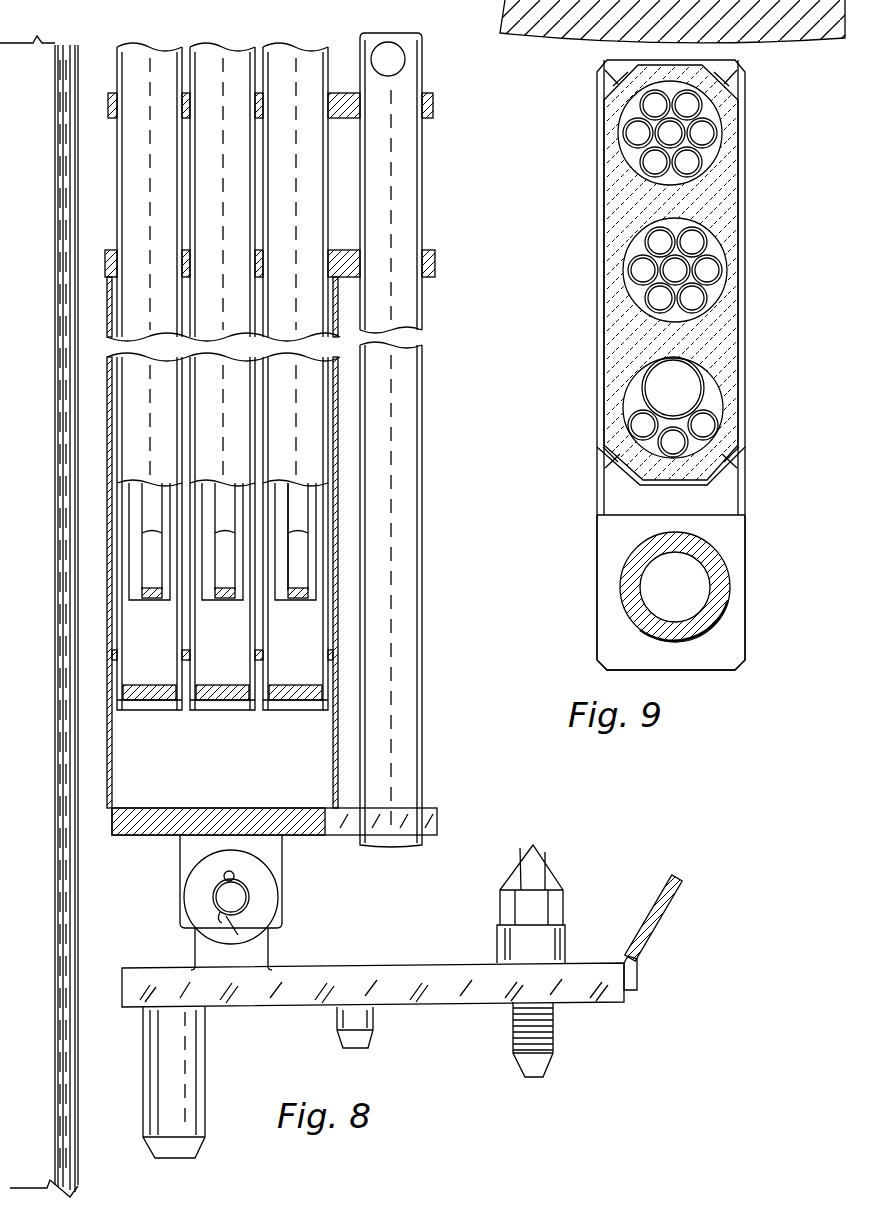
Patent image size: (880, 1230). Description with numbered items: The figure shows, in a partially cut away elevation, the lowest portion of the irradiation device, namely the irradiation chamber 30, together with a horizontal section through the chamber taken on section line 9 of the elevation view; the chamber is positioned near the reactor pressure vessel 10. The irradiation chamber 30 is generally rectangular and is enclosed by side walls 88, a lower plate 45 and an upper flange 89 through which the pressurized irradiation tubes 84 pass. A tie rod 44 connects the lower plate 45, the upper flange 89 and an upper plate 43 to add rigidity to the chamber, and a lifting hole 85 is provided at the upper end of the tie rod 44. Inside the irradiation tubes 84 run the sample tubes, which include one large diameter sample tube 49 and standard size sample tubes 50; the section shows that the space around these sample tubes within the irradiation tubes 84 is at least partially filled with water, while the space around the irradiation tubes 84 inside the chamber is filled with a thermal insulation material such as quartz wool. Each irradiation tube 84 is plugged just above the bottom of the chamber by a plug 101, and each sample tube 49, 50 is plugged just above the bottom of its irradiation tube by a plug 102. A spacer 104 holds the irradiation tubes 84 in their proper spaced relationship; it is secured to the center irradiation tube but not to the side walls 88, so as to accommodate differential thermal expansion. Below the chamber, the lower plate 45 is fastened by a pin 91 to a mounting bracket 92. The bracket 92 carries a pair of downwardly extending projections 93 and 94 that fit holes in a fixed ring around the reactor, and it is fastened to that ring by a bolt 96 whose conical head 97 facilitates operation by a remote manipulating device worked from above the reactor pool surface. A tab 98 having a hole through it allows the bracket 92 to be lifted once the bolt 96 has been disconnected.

In FIG. 8, the reactor pressure vessel 10 is at (80, 922).
In FIG. 9, the reactor pressure vessel 10 is at (788, 43).
In FIG. 8, the pressurized irradiation tubes 84 is at (272, 47).
In FIG. 8, the upper plate 43 is at (344, 93).
In FIG. 8, the lifting hole 85 is at (405, 66).
In FIG. 8, the upper flange 89 is at (436, 262).
In FIG. 8, the irradiation chamber 30 is at (345, 408).
In FIG. 8, the side walls 88 is at (337, 470).
In FIG. 9, the side walls 88 is at (745, 220).
In FIG. 8, the section line 9— 9 is at (437, 535).
In FIG. 8, the standard size sample tubes 50 is at (303, 598).
In FIG. 9, the standard size sample tubes 50 is at (655, 162).
In FIG. 8, the plug 102 is at (320, 598).
In FIG. 8, the large diameter sample tube 49 is at (295, 600).
In FIG. 9, the large diameter sample tube 49 is at (661, 398).
In FIG. 8, the plug 101 is at (296, 700).
In FIG. 8, the spacer 104 is at (186, 660).
In FIG. 8, the tie rod 44 is at (428, 741).
In FIG. 9, the tie rod 44 is at (730, 578).
In FIG. 8, the lower plate 45 is at (437, 824).
In FIG. 9, the lower plate 45 is at (745, 612).
In FIG. 8, the pin 91 is at (250, 900).
In FIG. 8, the mounting bracket 92 is at (330, 969).
In FIG. 8, the downwardly extending projection 93 is at (206, 1093).
In FIG. 8, the downwardly extending projection 94 is at (373, 1042).
In FIG. 8, the bolt 96 is at (513, 1032).
In FIG. 8, the conical head 97 is at (540, 870).
In FIG. 8, the tab 98 is at (678, 888).